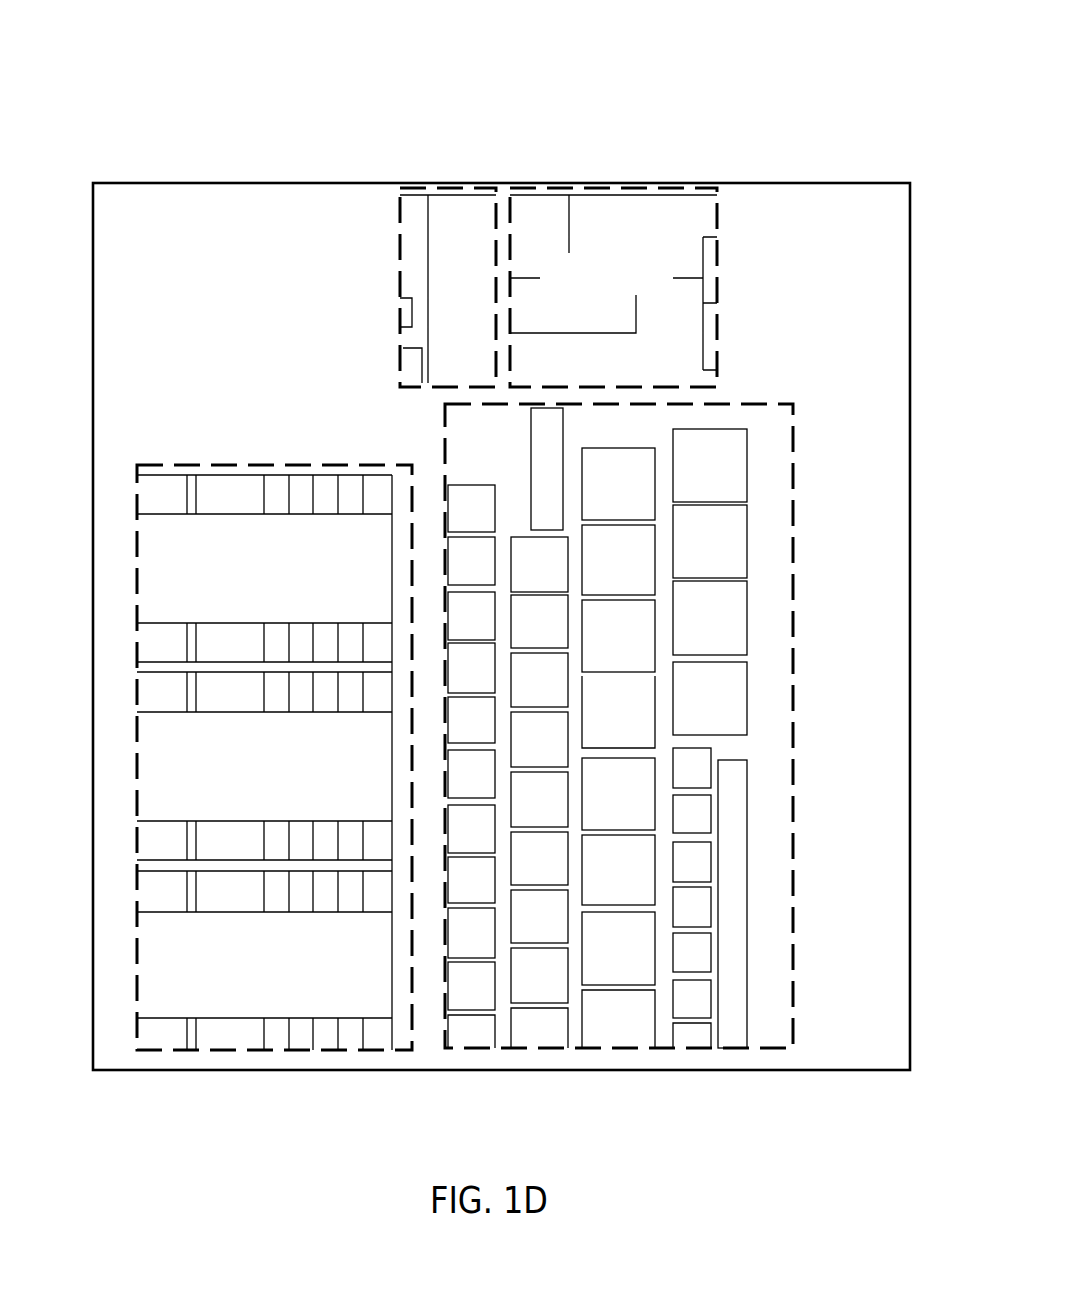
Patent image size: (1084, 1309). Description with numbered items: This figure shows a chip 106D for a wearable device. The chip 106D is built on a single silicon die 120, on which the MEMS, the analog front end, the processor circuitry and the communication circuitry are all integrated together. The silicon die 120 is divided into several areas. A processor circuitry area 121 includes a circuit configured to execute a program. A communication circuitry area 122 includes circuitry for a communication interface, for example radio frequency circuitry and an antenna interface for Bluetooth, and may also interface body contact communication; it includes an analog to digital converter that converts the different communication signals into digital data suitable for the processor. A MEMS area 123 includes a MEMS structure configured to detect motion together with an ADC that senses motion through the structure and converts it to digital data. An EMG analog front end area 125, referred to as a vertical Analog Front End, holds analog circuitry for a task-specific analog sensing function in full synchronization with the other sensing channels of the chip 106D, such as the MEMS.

The chip 106D is at (776, 91).
The silicon die 120 is at (272, 182).
The EMG analog front end area 125 is at (400, 222).
The MEMS area 123 is at (718, 220).
The communication circuitry area 122 is at (158, 466).
The processor circuitry area 121 is at (795, 413).